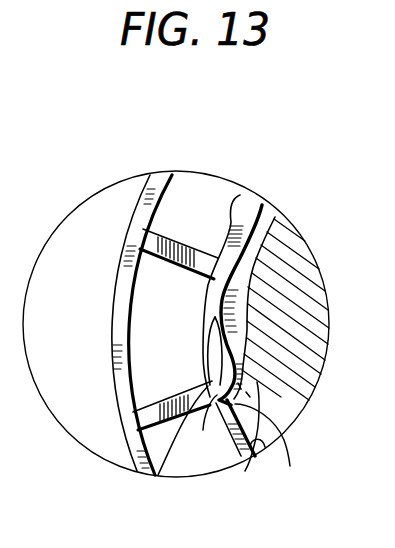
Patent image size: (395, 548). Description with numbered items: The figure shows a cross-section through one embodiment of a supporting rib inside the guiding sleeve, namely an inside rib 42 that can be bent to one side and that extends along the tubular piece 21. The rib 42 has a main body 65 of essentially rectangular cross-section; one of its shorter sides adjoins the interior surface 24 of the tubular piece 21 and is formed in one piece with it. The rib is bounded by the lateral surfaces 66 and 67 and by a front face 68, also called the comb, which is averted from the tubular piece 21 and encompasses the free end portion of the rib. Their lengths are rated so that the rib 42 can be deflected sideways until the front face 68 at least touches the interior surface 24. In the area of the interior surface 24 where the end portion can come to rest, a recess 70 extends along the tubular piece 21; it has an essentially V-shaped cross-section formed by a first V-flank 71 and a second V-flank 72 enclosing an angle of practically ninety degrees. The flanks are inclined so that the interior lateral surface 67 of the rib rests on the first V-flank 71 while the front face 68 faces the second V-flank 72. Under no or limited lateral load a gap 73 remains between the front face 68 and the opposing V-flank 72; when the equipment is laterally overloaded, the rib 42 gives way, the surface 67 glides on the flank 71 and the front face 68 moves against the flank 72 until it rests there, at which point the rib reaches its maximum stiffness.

The tubular piece 21 is at (240, 195).
The inside rib 42 is at (256, 236).
The lateral surface 66 is at (238, 305).
The interior lateral surface 67 is at (205, 332).
The first V-flank 71 is at (207, 382).
The recess 70 is at (158, 475).
The second V-flank 72 is at (203, 430).
The gap 73 is at (236, 411).
The interior surface 24 is at (258, 447).
The main body 65 is at (238, 383).
The front face 68 is at (248, 394).